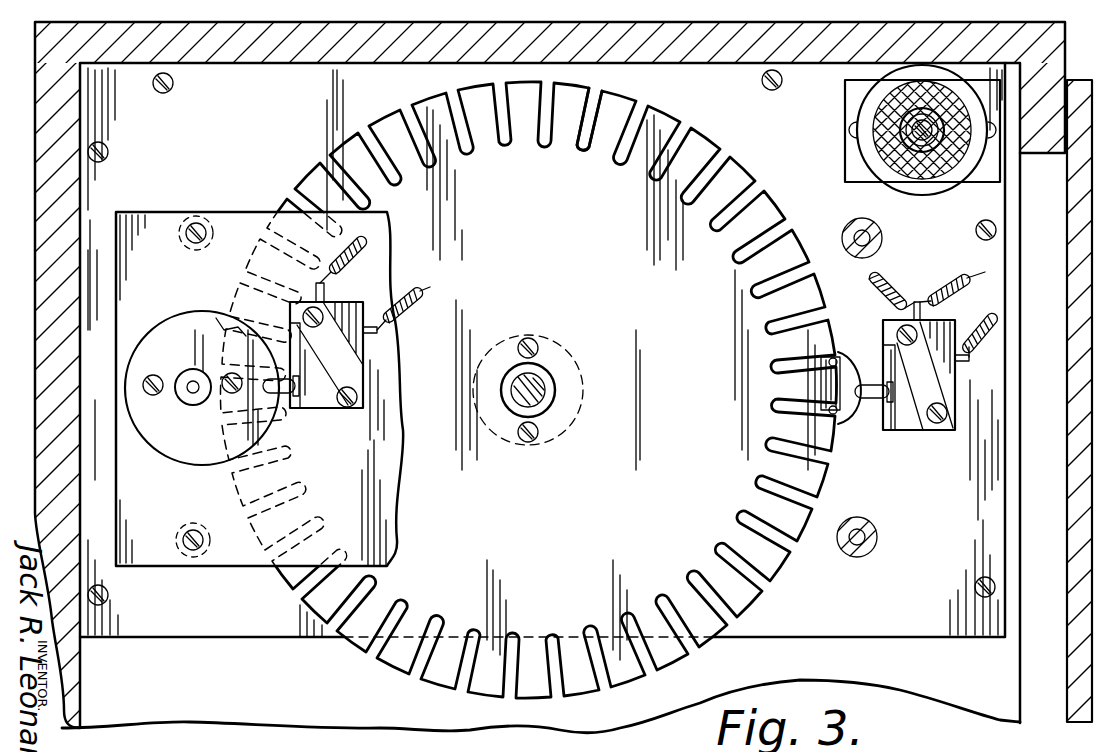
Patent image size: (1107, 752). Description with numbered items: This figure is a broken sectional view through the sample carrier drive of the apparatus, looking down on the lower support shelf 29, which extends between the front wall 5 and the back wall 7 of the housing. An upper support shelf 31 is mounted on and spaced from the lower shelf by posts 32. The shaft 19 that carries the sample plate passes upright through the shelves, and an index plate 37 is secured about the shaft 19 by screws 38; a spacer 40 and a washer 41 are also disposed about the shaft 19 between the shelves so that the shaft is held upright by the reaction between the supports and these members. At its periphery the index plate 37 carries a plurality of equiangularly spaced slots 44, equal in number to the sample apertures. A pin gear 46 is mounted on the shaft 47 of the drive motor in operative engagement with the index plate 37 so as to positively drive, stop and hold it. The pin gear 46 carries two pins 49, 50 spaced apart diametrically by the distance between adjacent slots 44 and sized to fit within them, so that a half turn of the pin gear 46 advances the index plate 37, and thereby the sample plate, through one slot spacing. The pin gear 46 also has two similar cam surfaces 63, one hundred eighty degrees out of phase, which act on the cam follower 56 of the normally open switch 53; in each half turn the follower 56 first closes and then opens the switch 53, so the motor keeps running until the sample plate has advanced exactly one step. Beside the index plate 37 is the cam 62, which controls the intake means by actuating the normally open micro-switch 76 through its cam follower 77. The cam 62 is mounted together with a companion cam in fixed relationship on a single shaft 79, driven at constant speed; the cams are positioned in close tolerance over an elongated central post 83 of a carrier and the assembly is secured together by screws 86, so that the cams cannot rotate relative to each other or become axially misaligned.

The front wall 5 is at (1066, 672).
The back wall 7 is at (35, 372).
The shaft 19 is at (540, 407).
The lower support shelf 29 is at (843, 625).
The upper support shelf 31 is at (397, 490).
The posts 32 is at (208, 220).
The index plate 37 is at (700, 152).
The screws 38 is at (537, 350).
The spacer 40 is at (552, 381).
The washer 41 is at (583, 403).
The slots 44 is at (590, 118).
The pin gear 46 is at (849, 420).
The shaft of motor 47 is at (826, 384).
The pin 49 is at (832, 410).
The pin 50 is at (836, 360).
The switch 53 is at (948, 377).
The cam follower 56 is at (866, 400).
The cam 62 is at (202, 388).
The cam surfaces 63 is at (782, 408).
The micro-switch 76 is at (360, 357).
The cam follower 77 is at (282, 396).
The shaft 79 is at (187, 388).
The central post 83 is at (194, 370).
The screws 86 is at (152, 383).